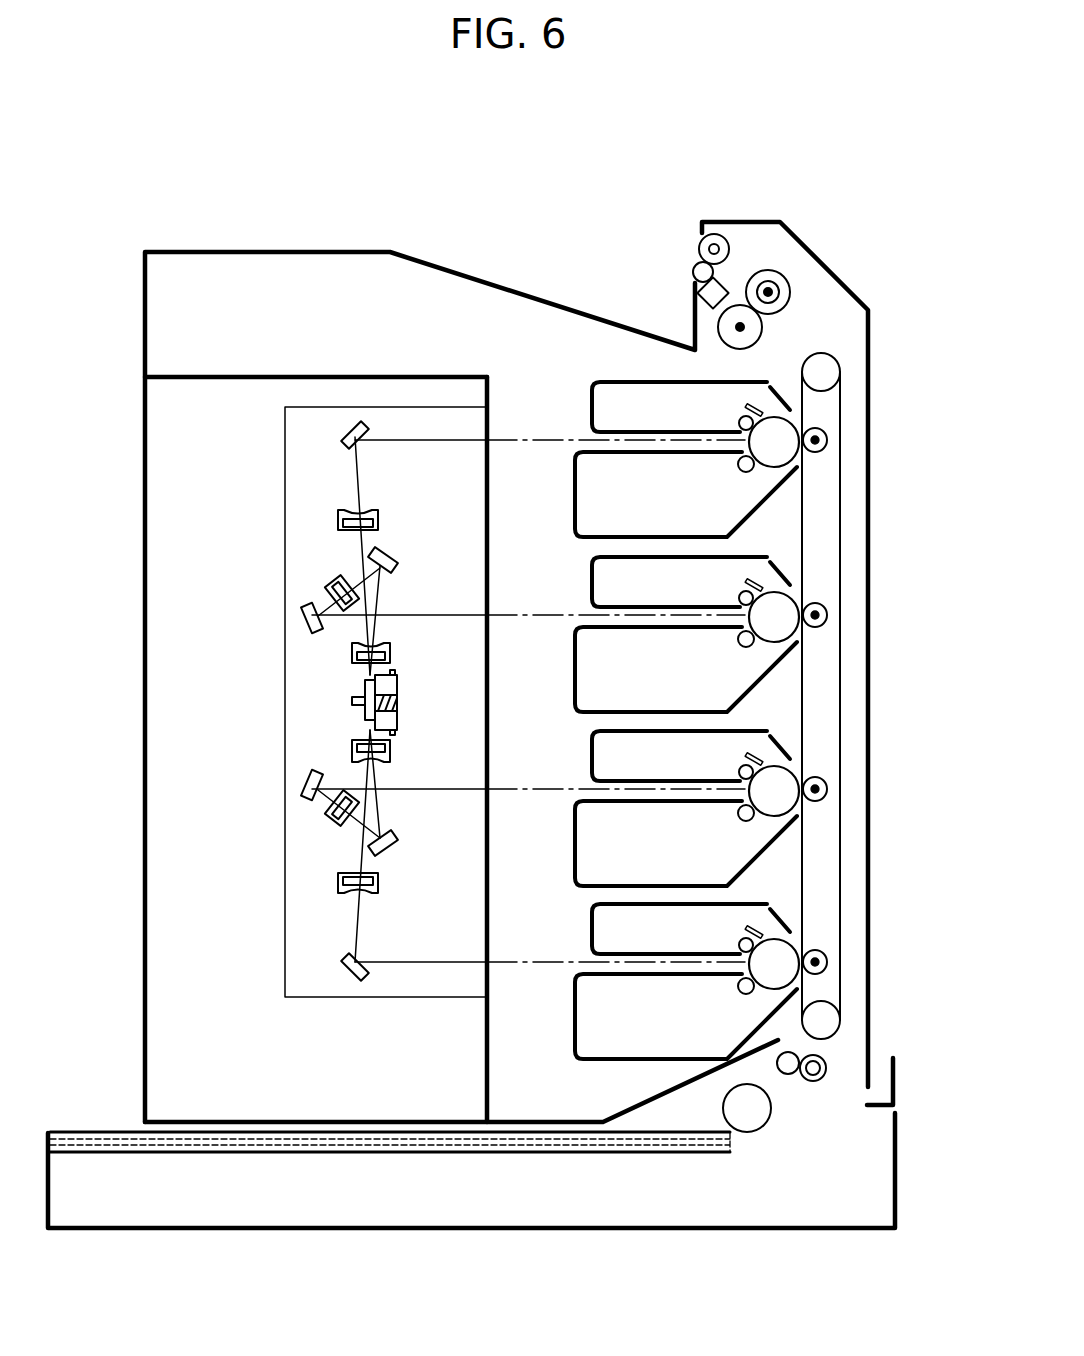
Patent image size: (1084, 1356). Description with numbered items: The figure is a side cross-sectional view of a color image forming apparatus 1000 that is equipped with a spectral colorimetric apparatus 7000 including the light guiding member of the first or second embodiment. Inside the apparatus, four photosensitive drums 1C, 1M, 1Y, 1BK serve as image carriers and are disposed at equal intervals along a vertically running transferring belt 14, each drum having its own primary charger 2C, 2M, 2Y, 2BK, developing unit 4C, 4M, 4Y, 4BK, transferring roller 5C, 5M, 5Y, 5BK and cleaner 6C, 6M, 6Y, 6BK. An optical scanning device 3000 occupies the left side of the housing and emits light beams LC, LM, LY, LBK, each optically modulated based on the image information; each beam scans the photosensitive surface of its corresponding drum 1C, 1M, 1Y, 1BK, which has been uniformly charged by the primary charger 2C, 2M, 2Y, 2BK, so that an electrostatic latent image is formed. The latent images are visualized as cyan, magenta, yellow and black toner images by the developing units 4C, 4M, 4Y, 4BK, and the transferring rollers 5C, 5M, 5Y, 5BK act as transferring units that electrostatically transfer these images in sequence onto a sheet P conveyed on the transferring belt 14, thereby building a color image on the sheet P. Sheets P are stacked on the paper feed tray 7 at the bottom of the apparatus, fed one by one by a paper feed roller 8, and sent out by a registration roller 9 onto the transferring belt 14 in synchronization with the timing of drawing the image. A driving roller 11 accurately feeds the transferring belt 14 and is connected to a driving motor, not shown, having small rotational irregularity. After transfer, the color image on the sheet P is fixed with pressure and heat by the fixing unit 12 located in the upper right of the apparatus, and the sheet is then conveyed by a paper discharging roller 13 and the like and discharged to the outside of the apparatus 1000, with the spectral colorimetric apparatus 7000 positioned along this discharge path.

The color image forming apparatus 1000 is at (847, 173).
The optical scanning device 3000 is at (285, 710).
The spectral colorimetric apparatus 7000 is at (722, 285).
The transferring belt 14 is at (841, 405).
The driving roller 11 is at (841, 362).
The fixing unit 12 is at (791, 300).
The paper discharging roller 13 is at (700, 247).
The registration roller 9 is at (815, 1082).
The paper feed roller 8 is at (763, 1124).
The paper feed tray 7 is at (472, 1227).
The sheet P is at (663, 1143).
The photosensitive drum 1BK is at (772, 462).
The photosensitive drum 1Y is at (772, 637).
The photosensitive drum 1M is at (772, 811).
The photosensitive drum 1C is at (772, 984).
The primary charger 2BK is at (739, 423).
The primary charger 2Y is at (739, 598).
The primary charger 2M is at (739, 772).
The primary charger 2C is at (739, 945).
The developing unit 4BK is at (738, 463).
The developing unit 4Y is at (738, 638).
The developing unit 4M is at (738, 812).
The developing unit 4C is at (738, 985).
The transferring roller 5BK is at (827, 447).
The transferring roller 5Y is at (827, 622).
The transferring roller 5M is at (827, 796).
The transferring roller 5C is at (827, 969).
The cleaner 6BK is at (771, 387).
The cleaner 6Y is at (771, 562).
The cleaner 6M is at (771, 736).
The cleaner 6C is at (771, 909).
The light beam LBK is at (515, 442).
The light beam LY is at (515, 617).
The light beam LM is at (515, 791).
The light beam LC is at (515, 964).